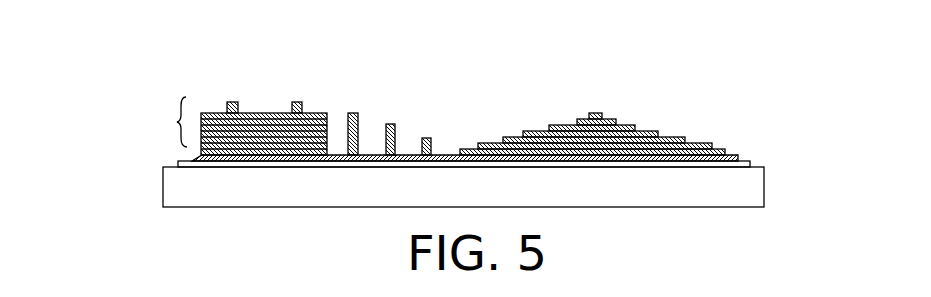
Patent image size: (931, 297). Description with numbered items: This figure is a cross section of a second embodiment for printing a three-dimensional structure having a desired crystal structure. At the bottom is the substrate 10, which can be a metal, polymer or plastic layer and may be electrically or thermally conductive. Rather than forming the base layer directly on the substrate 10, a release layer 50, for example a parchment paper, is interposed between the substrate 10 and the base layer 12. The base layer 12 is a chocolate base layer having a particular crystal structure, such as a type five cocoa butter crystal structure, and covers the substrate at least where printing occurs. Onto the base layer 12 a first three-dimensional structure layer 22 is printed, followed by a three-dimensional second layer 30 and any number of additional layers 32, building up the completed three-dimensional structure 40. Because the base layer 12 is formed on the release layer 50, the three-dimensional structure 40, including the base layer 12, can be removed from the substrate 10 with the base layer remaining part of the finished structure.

The substrate 10 is at (163, 182).
The release layer 50 is at (749, 163).
The base layer 12 is at (194, 156).
The 3D structure 40 is at (250, 107).
The additional layers 32 is at (177, 122).
The first 3D structure layer 22 is at (719, 152).
The 3D second layer 30 is at (698, 144).